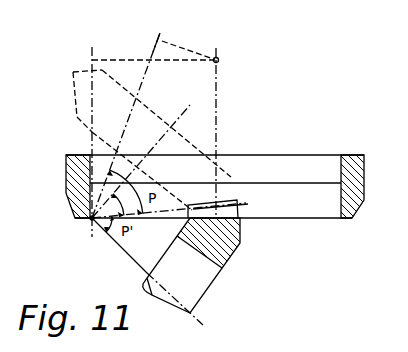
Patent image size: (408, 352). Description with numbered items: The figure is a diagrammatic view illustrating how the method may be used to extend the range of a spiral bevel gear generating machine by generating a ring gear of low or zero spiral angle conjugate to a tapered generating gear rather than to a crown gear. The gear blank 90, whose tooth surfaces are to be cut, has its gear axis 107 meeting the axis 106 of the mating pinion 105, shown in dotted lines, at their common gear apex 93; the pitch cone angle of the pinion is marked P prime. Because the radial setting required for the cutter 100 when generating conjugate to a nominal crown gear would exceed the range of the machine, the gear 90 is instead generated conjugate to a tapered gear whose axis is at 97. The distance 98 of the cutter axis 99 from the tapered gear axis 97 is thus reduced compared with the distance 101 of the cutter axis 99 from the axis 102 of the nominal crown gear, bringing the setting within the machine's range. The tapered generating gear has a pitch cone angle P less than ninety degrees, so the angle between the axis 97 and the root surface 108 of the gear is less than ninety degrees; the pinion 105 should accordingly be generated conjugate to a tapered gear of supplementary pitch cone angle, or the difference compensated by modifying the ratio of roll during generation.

The gear blank 90 is at (216, 267).
The gear apex 93 is at (90, 220).
The axis of tapered gear 97 is at (143, 86).
The distance 98 is at (213, 57).
The axis of cutter 99 is at (218, 121).
The cutter 100 is at (358, 170).
The distance 101 is at (108, 58).
The axis of nominal crown gear 102 is at (90, 141).
The pinion 105 is at (76, 103).
The axis of pinion 106 is at (170, 129).
The axis of gear 107 is at (204, 320).
The root surface of gear 108 is at (296, 220).